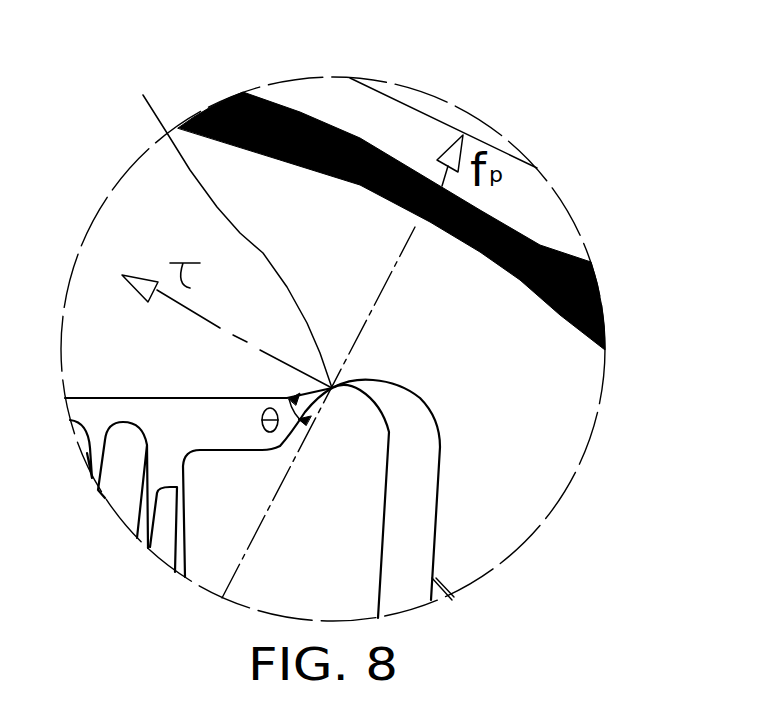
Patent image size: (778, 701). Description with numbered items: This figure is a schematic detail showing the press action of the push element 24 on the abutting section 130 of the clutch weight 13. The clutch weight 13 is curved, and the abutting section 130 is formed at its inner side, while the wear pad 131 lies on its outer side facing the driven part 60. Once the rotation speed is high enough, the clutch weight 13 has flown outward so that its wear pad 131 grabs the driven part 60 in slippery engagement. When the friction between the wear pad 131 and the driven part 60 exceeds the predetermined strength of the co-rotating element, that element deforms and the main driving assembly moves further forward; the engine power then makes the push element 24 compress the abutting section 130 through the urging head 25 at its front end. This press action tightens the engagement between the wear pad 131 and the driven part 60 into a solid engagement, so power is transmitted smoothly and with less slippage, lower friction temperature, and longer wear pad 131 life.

The clutch weight 13 is at (147, 198).
The abutting section 130 is at (229, 228).
The wear pad 131 is at (317, 116).
The driven part 60 is at (388, 130).
The push element 24 is at (330, 527).
The urging head 25 is at (350, 422).